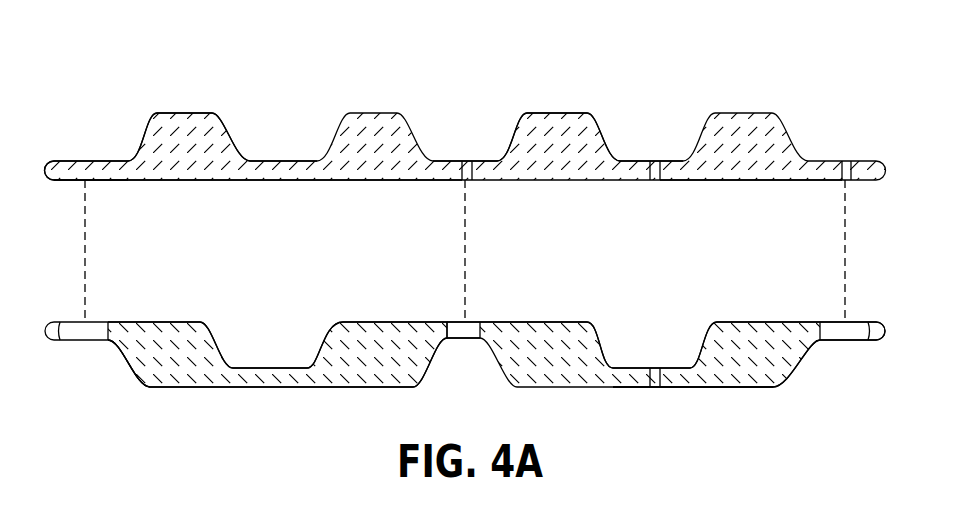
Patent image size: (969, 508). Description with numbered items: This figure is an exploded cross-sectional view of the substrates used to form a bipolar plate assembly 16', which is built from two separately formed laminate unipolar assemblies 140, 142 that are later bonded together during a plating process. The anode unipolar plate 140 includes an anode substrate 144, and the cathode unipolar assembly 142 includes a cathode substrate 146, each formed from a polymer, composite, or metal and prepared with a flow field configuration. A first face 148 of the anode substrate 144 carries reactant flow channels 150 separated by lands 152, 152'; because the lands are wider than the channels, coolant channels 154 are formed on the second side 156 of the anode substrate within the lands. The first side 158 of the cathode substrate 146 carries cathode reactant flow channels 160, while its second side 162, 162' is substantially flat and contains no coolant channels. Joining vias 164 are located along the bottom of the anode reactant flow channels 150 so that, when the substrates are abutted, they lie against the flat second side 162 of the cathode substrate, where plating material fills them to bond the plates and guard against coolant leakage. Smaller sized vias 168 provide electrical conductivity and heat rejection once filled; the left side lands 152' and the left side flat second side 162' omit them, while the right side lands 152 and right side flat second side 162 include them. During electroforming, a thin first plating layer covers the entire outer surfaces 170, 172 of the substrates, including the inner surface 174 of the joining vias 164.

The bipolar plate assembly 16' is at (465, 254).
The unipolar assembly 140 is at (137, 428).
The unipolar assembly 142 is at (134, 84).
The substrate 144 is at (205, 387).
The substrate 146 is at (193, 125).
The first face 148 is at (760, 387).
The reactant flow channels 150 is at (484, 374).
The lands 152 is at (626, 377).
The left side lands 152' is at (377, 377).
The coolant channels 154 is at (294, 356).
The second side 156 is at (765, 322).
The first side 158 is at (530, 112).
The cathode reactant flow channels 160 is at (297, 144).
The second side 162 is at (751, 204).
The left side flat second side 162' is at (258, 203).
The joining vias 164 is at (108, 322).
The smaller sized vias 168 is at (471, 180).
The outer surface 170 is at (135, 364).
The outer surface 172 is at (131, 160).
The inner surface 174 is at (447, 322).